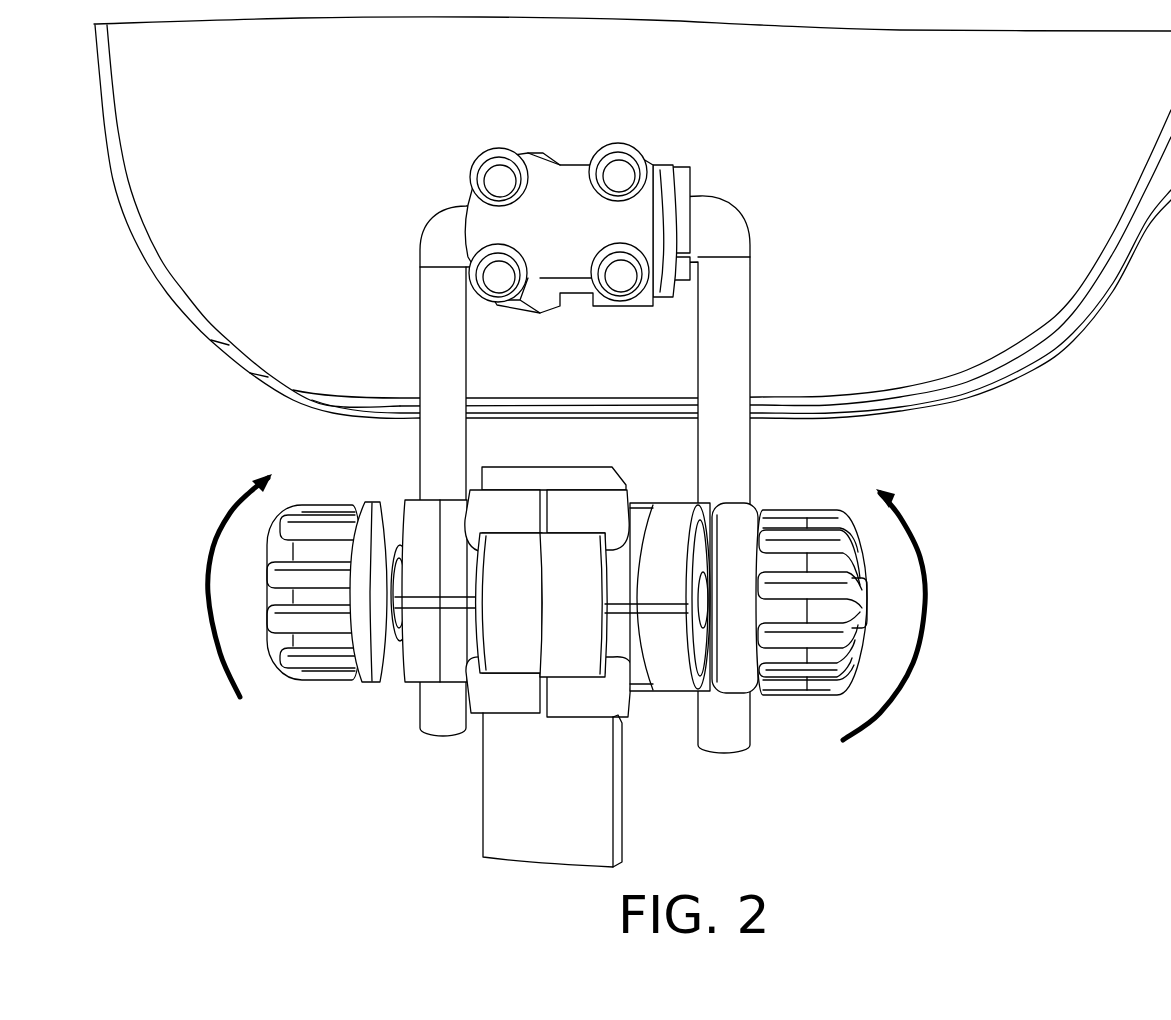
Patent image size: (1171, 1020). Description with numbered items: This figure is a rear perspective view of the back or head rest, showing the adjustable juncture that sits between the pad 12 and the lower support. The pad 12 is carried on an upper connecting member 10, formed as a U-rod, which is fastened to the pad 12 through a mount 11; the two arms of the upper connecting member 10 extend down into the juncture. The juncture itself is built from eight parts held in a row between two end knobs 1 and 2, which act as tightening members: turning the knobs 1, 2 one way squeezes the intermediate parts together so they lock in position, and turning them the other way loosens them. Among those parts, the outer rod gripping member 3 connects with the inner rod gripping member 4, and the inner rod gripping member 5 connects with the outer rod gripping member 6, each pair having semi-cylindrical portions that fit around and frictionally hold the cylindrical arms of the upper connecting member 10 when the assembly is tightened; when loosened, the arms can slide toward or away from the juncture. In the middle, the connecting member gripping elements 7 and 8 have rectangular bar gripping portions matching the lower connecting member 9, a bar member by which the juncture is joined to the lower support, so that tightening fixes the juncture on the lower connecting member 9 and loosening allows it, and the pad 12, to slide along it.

The end knob 1 is at (317, 628).
The end knob 2 is at (782, 560).
The outer rod gripping member 3 is at (377, 537).
The inner rod gripping member 4 is at (415, 555).
The inner rod gripping member 5 is at (662, 633).
The outer rod gripping member 6 is at (730, 643).
The connecting member gripping element 7 is at (500, 518).
The connecting member gripping element 8 is at (563, 555).
The lower connecting member 9 is at (530, 785).
The upper connecting member 10 is at (443, 345).
The mount 11 is at (580, 227).
The pad 12 is at (250, 205).